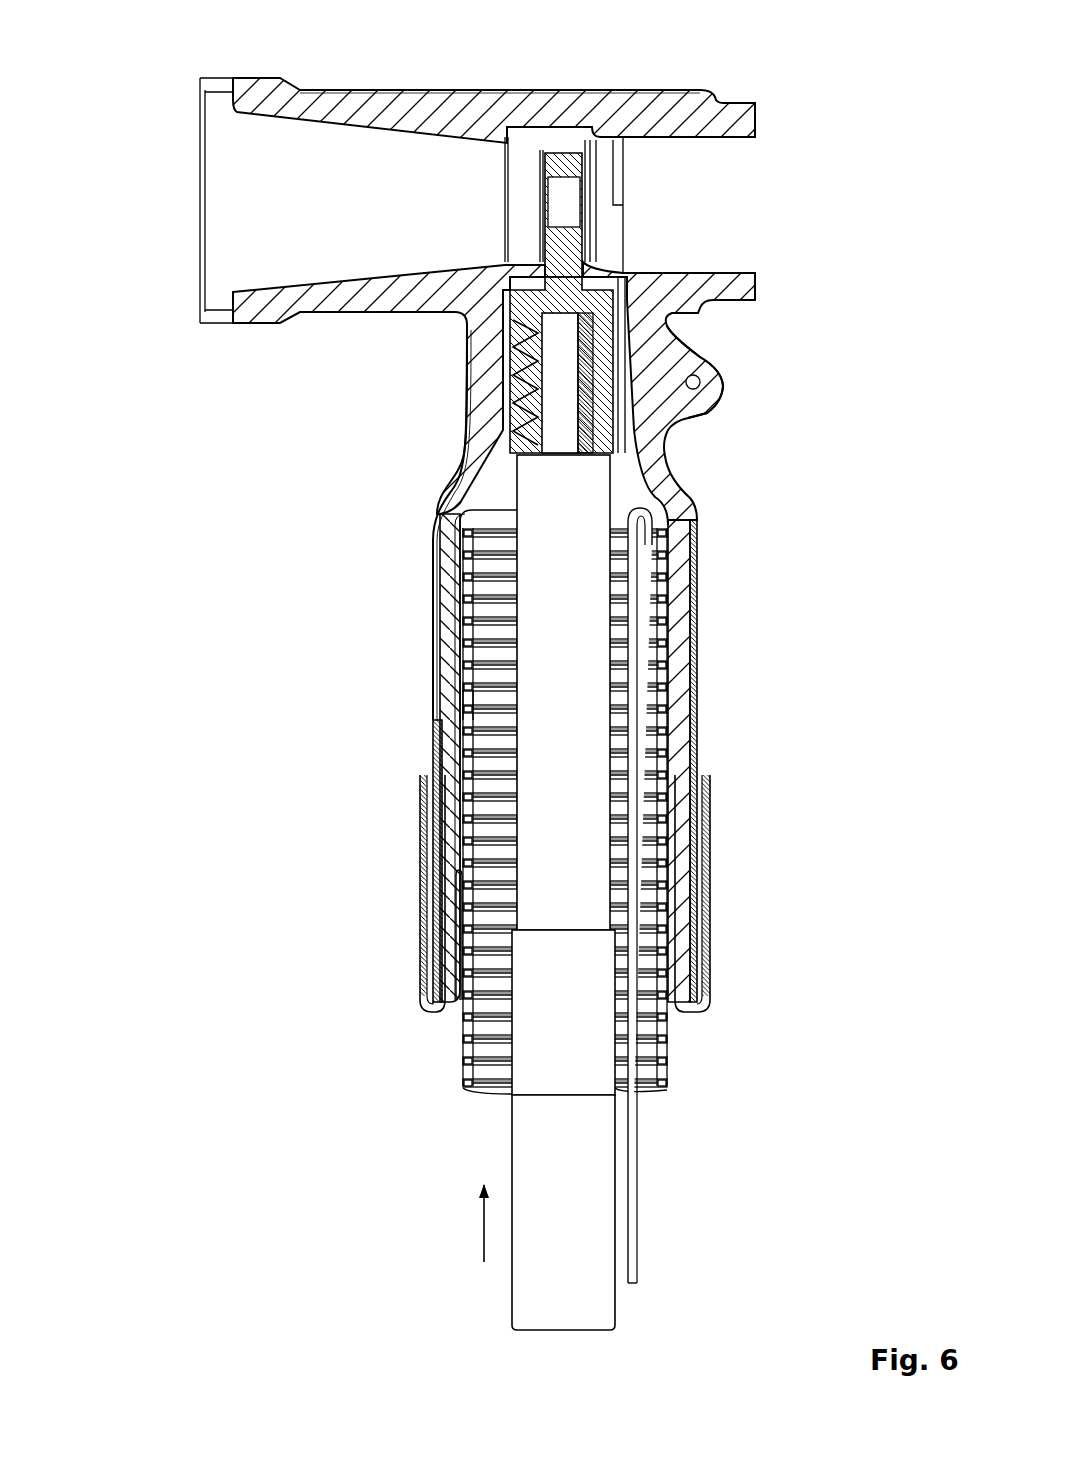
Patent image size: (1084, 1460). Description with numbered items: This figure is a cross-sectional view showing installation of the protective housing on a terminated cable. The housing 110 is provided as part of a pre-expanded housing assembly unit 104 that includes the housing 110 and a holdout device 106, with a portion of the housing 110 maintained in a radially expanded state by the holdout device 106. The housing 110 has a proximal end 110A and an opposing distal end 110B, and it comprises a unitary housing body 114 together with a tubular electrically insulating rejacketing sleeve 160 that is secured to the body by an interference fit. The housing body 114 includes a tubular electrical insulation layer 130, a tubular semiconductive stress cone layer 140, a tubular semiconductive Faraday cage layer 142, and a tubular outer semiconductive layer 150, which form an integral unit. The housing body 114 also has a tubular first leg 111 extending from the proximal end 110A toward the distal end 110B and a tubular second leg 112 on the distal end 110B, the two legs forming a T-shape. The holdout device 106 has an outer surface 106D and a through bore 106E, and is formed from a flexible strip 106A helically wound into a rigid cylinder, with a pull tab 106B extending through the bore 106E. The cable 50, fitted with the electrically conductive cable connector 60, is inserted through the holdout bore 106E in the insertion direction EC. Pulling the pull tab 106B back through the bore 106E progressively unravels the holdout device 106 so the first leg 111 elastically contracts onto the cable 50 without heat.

The pre-expanded housing assembly unit 104 is at (772, 42).
The housing 110 is at (710, 606).
The proximal end 110A is at (713, 1046).
The distal end 110B is at (164, 104).
The first leg 111 is at (387, 511).
The second leg 112 is at (364, 44).
The housing body 114 is at (702, 547).
The electrical insulation layer 130 is at (443, 580).
The semiconductive stress cone layer 140 is at (460, 882).
The outer semiconductive layer 150 is at (495, 687).
The rejacketing sleeve 160 is at (424, 806).
The cable connector 60 is at (602, 358).
The semiconductive Faraday cage layer 142 is at (620, 387).
The holdout device 106 is at (458, 1062).
The flexible strip 106A is at (480, 625).
The pull tab 106B is at (637, 1240).
The outer surface 106D is at (672, 1037).
The holdout bore 106E is at (462, 697).
The cable 50 is at (510, 1299).
The insertion direction EC is at (482, 1232).